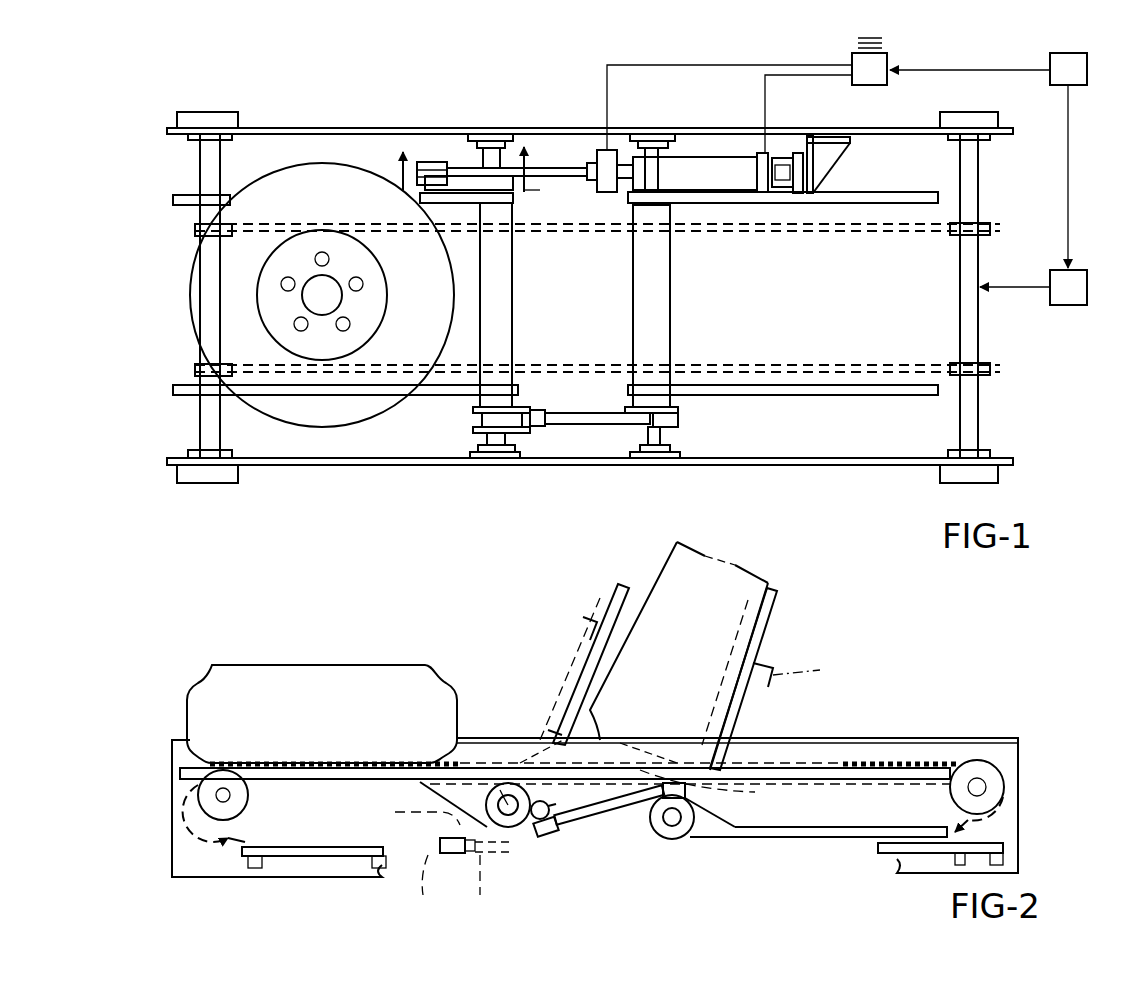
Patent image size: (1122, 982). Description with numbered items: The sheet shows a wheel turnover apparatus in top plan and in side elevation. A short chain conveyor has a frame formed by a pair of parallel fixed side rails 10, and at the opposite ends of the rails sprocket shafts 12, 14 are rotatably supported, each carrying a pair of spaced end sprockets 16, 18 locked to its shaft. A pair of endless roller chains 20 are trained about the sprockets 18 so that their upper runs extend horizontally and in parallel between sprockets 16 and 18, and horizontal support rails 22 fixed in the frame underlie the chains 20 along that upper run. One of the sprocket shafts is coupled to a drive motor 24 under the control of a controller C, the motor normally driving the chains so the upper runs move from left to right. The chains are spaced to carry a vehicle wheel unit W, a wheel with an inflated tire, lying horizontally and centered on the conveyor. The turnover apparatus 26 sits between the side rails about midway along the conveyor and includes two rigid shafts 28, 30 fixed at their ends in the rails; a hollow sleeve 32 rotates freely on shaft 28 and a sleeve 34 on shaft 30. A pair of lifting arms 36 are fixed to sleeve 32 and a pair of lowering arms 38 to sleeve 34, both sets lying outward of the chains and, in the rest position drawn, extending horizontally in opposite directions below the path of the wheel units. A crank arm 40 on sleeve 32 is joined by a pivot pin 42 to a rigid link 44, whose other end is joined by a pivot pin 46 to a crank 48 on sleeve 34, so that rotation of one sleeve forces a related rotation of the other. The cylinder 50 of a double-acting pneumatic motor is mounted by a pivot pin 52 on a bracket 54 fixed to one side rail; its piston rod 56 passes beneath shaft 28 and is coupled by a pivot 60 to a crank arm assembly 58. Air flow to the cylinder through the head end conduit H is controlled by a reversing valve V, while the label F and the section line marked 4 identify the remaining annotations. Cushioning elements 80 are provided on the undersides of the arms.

In FIG. 1, the side rails 10 is at (360, 128).
In FIG. 2, the side rails 10 is at (1007, 747).
In FIG. 1, the sprocket shaft 12 is at (200, 420).
In FIG. 1, the sprocket shaft 14 is at (978, 420).
In FIG. 2, the sprocket shaft 14 is at (230, 795).
In FIG. 1, the end sprockets 16 is at (195, 228).
In FIG. 2, the end sprockets 16 is at (247, 810).
In FIG. 1, the end sprockets 18 is at (985, 228).
In FIG. 2, the end sprockets 18 is at (1003, 793).
In FIG. 1, the endless roller chains 20 is at (908, 232).
In FIG. 2, the endless roller chains 20 is at (900, 760).
In FIG. 2, the horizontal support rails 22 is at (845, 779).
In FIG. 1, the drive motor 24 is at (1072, 270).
In FIG. 1, the turnover apparatus 26 is at (578, 166).
In FIG. 2, the turnover apparatus 26 is at (578, 833).
In FIG. 1, the shaft 28 is at (505, 152).
In FIG. 2, the shaft 28 is at (507, 815).
In FIG. 1, the shaft 30 is at (658, 176).
In FIG. 2, the shaft 30 is at (665, 840).
In FIG. 1, the hollow sleeve 32 is at (512, 300).
In FIG. 2, the hollow sleeve 32 is at (514, 833).
In FIG. 1, the sleeve 34 is at (670, 300).
In FIG. 2, the sleeve 34 is at (678, 840).
In FIG. 1, the lifting arms 36 is at (450, 395).
In FIG. 2, the lifting arms 36 is at (343, 780).
In FIG. 1, the lowering arms 38 is at (868, 193).
In FIG. 2, the lowering arms 38 is at (795, 838).
In FIG. 1, the crank arm 40 is at (530, 400).
In FIG. 2, the crank arm 40 is at (536, 802).
In FIG. 2, the pivot pin 42 is at (550, 805).
In FIG. 1, the rigid link 44 is at (574, 425).
In FIG. 2, the rigid link 44 is at (608, 806).
In FIG. 2, the pivot pin 46 is at (716, 787).
In FIG. 2, the crank 48 is at (693, 800).
In FIG. 1, the cylinder 50 is at (710, 166).
In FIG. 1, the pivot pin 52 is at (788, 158).
In FIG. 1, the bracket 54 is at (835, 161).
In FIG. 1, the piston rod 56 is at (550, 178).
In FIG. 2, the piston rod 56 is at (487, 883).
In FIG. 1, the crank arm assembly 58 is at (464, 164).
In FIG. 2, the crank arm assembly 58 is at (435, 804).
In FIG. 1, the pivot 60 is at (416, 164).
In FIG. 2, the pivot 60 is at (448, 877).
In FIG. 2, the cushioning elements 80 is at (560, 620).
In FIG. 1, the vehicle wheel unit W is at (339, 423).
In FIG. 2, the vehicle wheel unit W is at (425, 665).
In FIG. 1, the reversing valve V is at (882, 58).
In FIG. 1, the controller C is at (1087, 72).
In FIG. 1, the head end conduit H is at (660, 63).
In FIG. 1, the fluid line F is at (770, 98).
In FIG. 1, the section line 4- 4 is at (461, 168).